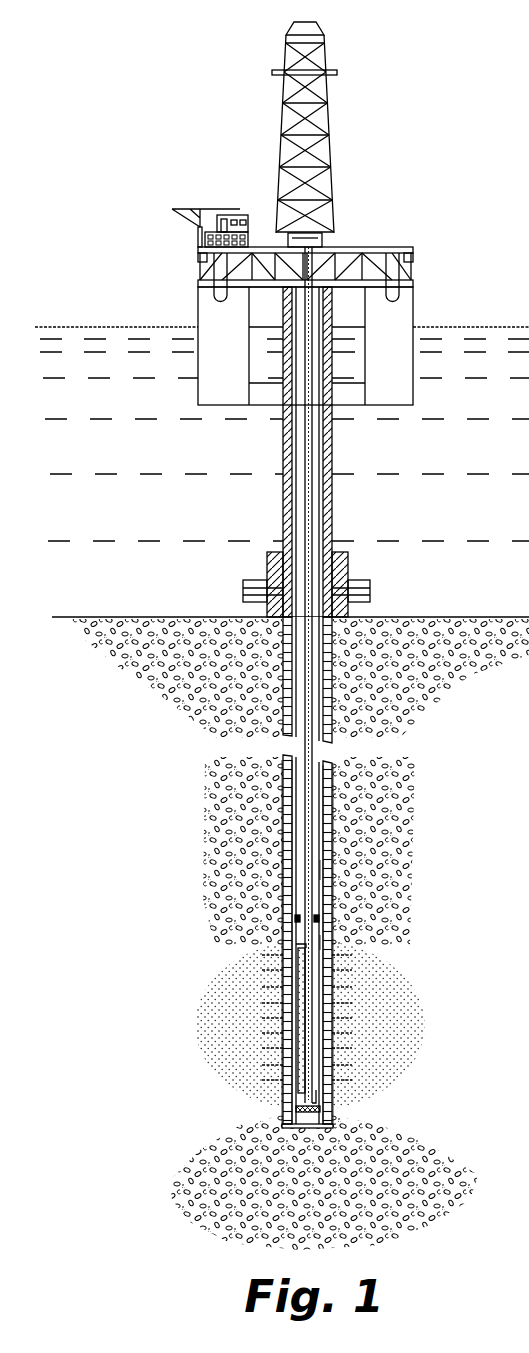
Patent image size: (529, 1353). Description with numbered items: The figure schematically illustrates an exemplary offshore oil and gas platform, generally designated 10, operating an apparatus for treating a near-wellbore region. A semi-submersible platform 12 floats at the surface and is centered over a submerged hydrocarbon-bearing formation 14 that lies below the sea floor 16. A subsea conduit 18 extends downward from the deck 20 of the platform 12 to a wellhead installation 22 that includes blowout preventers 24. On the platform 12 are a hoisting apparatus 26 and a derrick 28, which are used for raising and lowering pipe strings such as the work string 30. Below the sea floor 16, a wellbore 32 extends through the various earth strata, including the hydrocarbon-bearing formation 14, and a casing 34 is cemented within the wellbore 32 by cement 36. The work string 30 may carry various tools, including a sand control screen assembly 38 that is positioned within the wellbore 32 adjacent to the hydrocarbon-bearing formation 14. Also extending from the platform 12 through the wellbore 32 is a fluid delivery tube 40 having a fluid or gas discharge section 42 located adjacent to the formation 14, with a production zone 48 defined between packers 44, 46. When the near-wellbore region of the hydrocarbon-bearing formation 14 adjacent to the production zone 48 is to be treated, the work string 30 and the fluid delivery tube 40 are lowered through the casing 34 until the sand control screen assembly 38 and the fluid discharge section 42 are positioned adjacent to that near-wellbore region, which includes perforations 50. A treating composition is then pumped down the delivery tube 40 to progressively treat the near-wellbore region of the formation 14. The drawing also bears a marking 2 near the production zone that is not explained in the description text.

The offshore oil and gas platform 10 is at (168, 106).
The semi-submersible platform 12 is at (413, 248).
The hydrocarbon-bearing formation 14 is at (205, 988).
The sea floor 16 is at (505, 620).
The subsea conduit 18 is at (288, 506).
The deck 20 is at (413, 286).
The wellhead installation 22 is at (272, 567).
The blowout preventers 24 is at (368, 596).
The hoisting apparatus 26 is at (303, 232).
The derrick 28 is at (325, 55).
The work string 30 is at (313, 516).
The wellbore 32 is at (332, 815).
The casing 34 is at (283, 824).
The cement 36 is at (332, 846).
The sand control screen assembly 38 is at (300, 1031).
The fluid delivery tube 40 is at (320, 873).
The fluid or gas discharge section 42 is at (330, 1092).
The packer 44 is at (330, 917).
The packer 46 is at (330, 1112).
The production zone 48 is at (330, 942).
The perforations 50 is at (283, 1082).
The section line for FIG. 2 is at (427, 988).